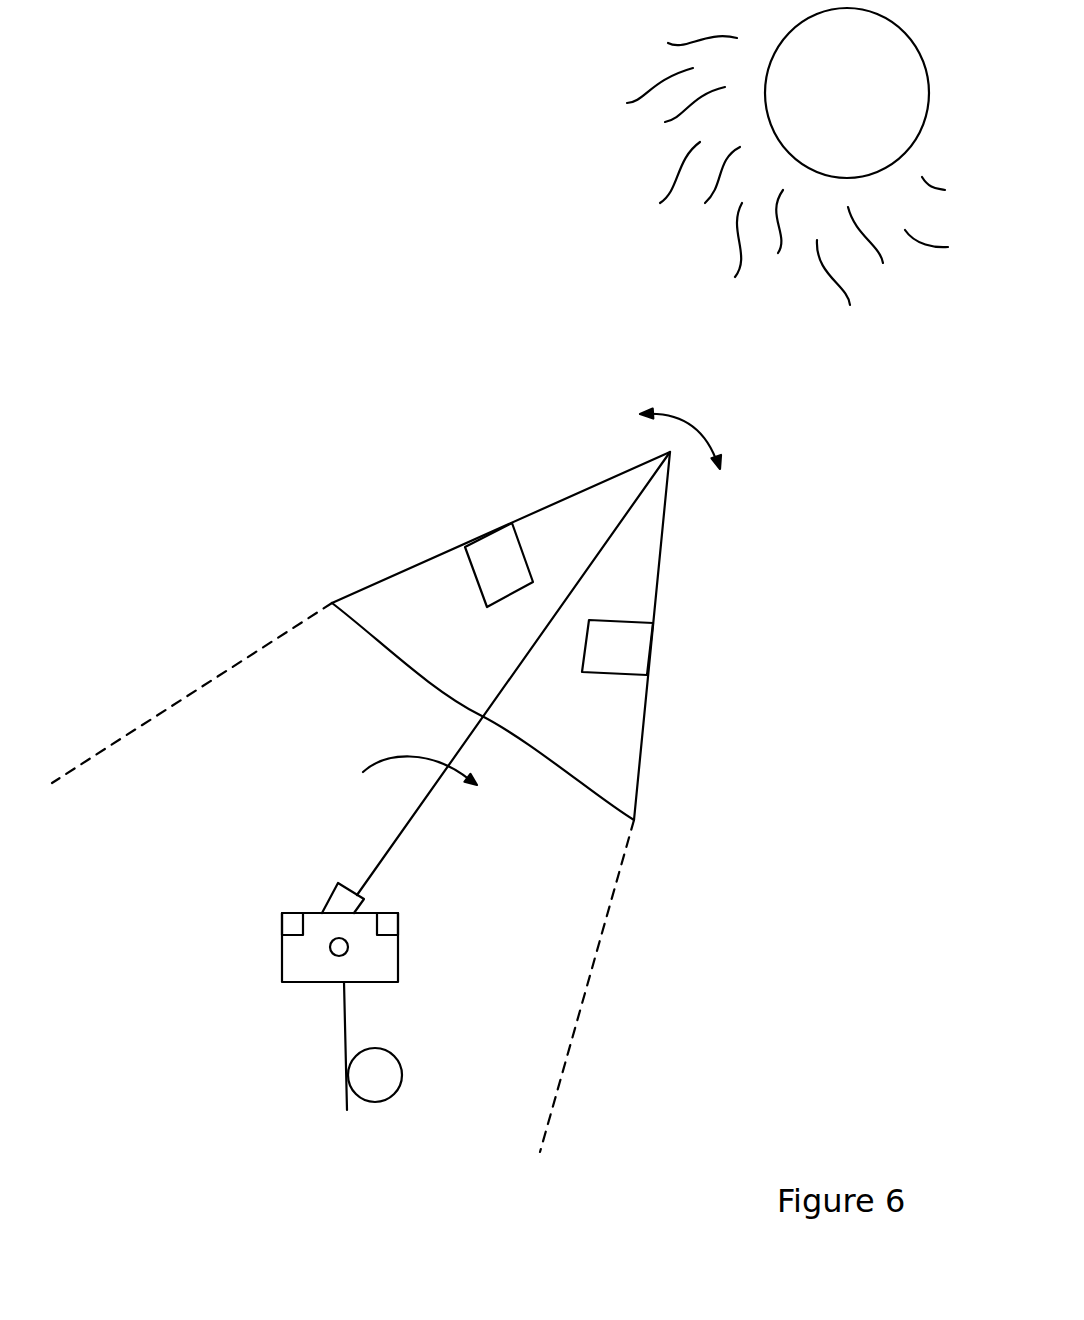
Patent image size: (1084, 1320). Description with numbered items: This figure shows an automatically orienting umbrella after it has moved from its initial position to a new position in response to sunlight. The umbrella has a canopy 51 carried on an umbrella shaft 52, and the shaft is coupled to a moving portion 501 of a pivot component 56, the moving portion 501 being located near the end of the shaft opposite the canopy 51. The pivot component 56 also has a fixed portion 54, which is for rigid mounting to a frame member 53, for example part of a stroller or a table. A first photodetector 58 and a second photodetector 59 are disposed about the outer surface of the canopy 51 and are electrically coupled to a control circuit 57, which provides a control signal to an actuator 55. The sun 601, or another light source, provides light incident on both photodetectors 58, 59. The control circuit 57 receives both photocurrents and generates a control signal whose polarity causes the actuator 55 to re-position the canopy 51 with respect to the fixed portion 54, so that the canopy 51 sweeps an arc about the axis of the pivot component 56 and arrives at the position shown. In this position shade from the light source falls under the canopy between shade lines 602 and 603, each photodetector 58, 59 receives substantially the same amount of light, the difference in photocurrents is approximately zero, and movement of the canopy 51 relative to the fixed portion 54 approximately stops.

The canopy 51 is at (642, 773).
The umbrella shaft 52 is at (384, 851).
The frame member 53 is at (400, 1093).
The fixed portion 54 is at (344, 1035).
The actuator 55 is at (387, 925).
The pivot component 56 is at (370, 982).
The control circuit 57 is at (287, 925).
The first photodetector 58 is at (493, 545).
The second photodetector 59 is at (635, 657).
The moving portion 501 is at (330, 902).
The sun 601 is at (875, 104).
The shade line 602 is at (598, 953).
The shade line 603 is at (232, 670).